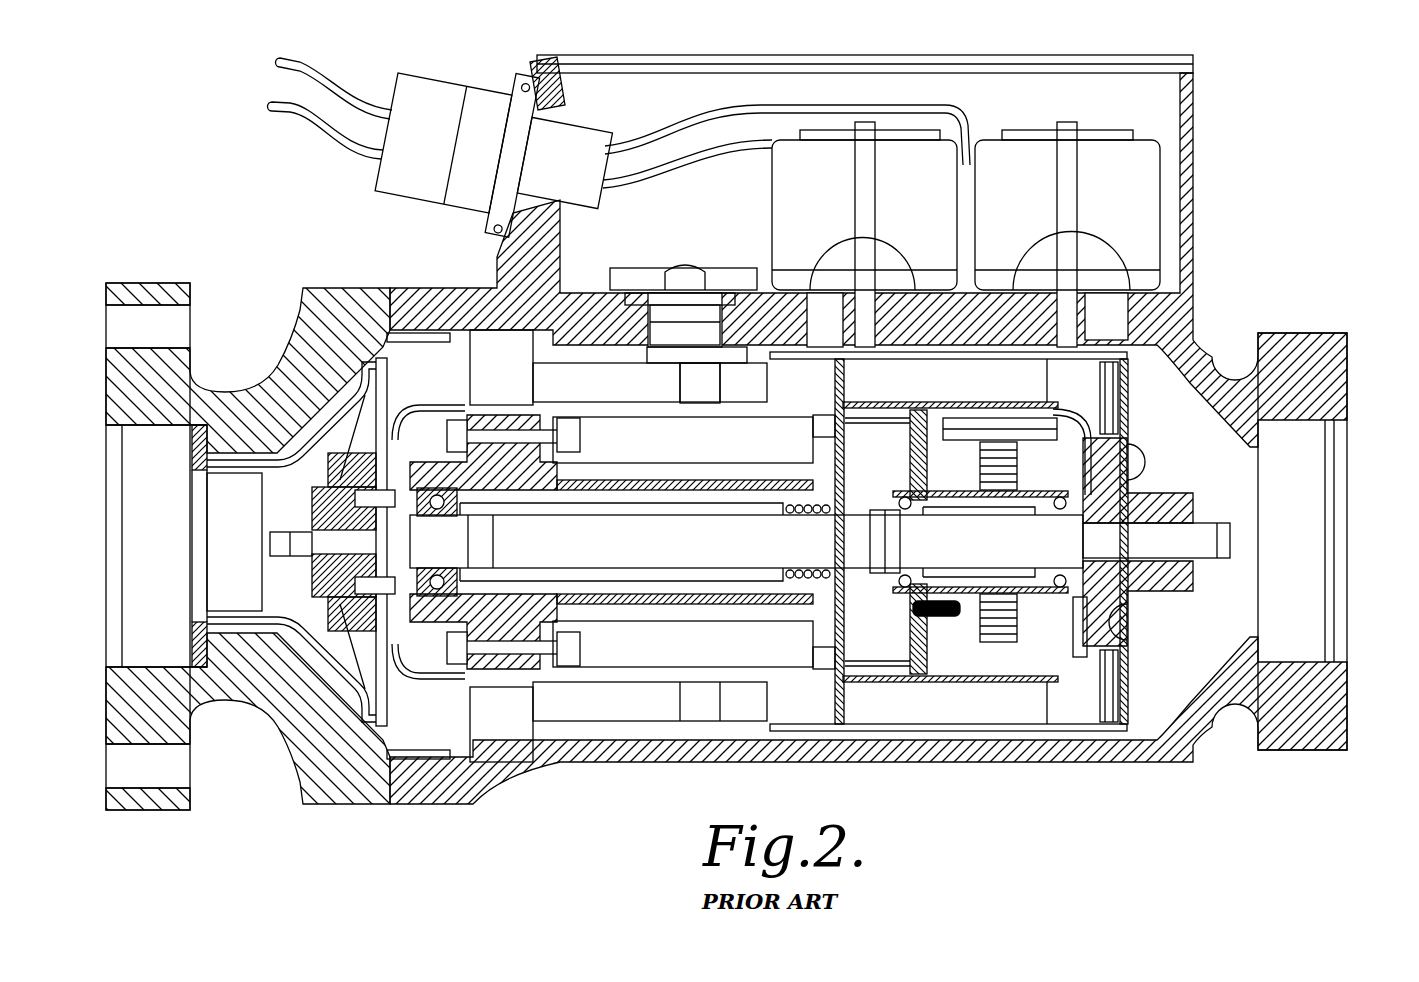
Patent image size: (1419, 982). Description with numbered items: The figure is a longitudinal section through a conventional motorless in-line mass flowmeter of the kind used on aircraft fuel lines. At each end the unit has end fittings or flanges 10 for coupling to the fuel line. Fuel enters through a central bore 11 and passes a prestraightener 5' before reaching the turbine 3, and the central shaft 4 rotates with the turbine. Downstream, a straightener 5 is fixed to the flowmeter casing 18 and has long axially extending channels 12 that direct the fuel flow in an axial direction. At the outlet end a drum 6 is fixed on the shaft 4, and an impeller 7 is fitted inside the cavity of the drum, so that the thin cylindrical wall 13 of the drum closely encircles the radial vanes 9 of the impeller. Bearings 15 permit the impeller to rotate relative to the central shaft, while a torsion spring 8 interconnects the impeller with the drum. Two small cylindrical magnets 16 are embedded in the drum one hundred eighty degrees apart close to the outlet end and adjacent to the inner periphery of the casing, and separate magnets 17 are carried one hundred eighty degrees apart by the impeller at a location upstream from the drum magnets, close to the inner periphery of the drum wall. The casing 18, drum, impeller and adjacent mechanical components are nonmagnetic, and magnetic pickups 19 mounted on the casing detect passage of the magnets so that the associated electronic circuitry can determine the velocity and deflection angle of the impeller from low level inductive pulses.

The turbine 3 is at (368, 662).
The central shaft 4 is at (627, 548).
The straightener 5 is at (460, 769).
The prestraightener 5' is at (206, 546).
The drum 6 is at (1165, 578).
The impeller 7 is at (1037, 672).
The torsion spring 8 is at (1012, 465).
The radial vanes 9 is at (1040, 380).
The end fittings or flanges 10 is at (106, 382).
The central bore 11 is at (145, 612).
The axially extending channels 12 is at (625, 700).
The thin cylindrical wall 13 is at (875, 362).
The bearings 15 is at (1033, 503).
The cylindrical magnets 16 is at (1112, 420).
The magnets 17 is at (815, 418).
The flowmeter casing 18 is at (1200, 330).
The magnetic pickups 19 is at (790, 215).